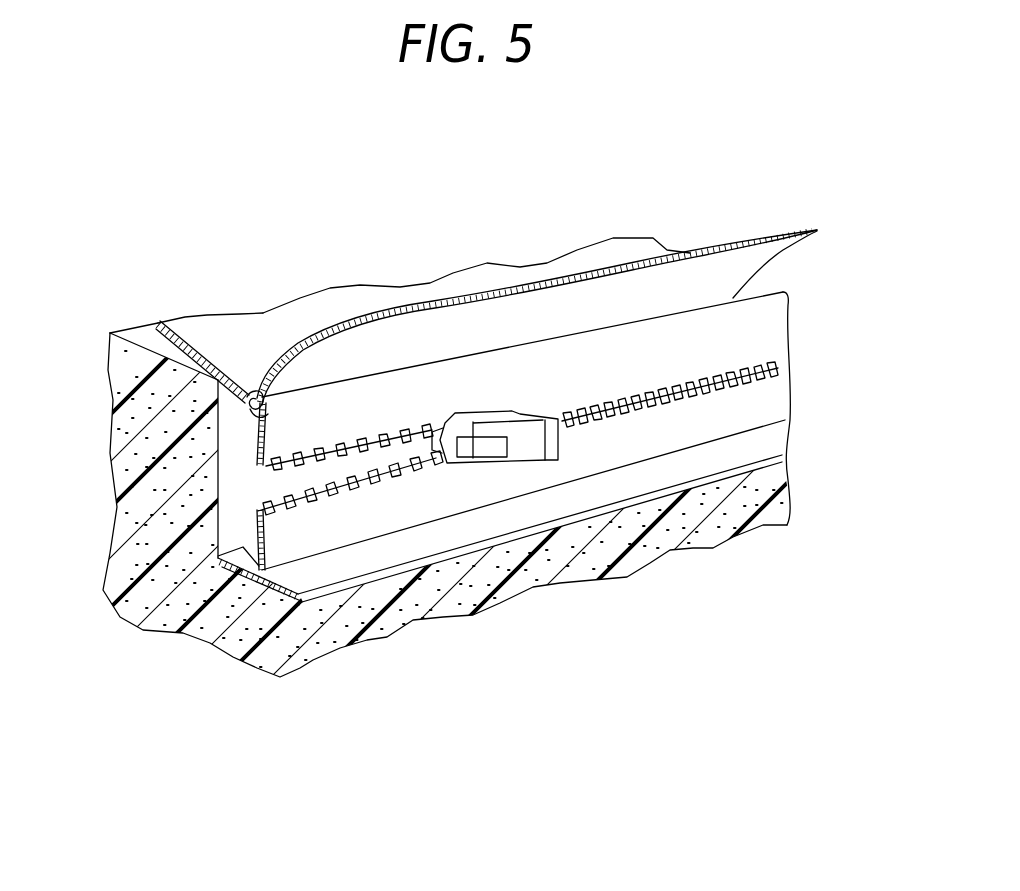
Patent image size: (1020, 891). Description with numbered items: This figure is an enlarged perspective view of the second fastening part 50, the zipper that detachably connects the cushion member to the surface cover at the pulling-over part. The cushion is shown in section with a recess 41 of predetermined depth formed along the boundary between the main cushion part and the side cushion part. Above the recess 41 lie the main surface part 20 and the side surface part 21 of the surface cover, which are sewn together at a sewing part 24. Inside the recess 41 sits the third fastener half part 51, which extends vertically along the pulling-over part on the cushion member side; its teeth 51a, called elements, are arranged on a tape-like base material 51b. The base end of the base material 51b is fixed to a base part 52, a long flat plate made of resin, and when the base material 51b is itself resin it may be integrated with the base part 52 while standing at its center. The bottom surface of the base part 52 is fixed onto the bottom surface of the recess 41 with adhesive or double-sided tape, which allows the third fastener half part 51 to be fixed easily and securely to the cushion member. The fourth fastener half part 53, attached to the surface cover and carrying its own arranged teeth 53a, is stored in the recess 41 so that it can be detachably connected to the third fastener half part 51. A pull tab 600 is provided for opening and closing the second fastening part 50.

The main surface part 20 is at (433, 327).
The side surface part 21 is at (265, 330).
The sewing part 24 is at (247, 403).
The recess 41 is at (237, 495).
The second fastening part 50 is at (521, 450).
The third fastener half part 51 is at (356, 518).
The teeth 51a is at (293, 592).
The base material 51b is at (627, 440).
The base part 52 is at (457, 533).
The fourth fastener half part 53 is at (760, 336).
The teeth 53a is at (365, 445).
The pull tab 600 is at (510, 430).